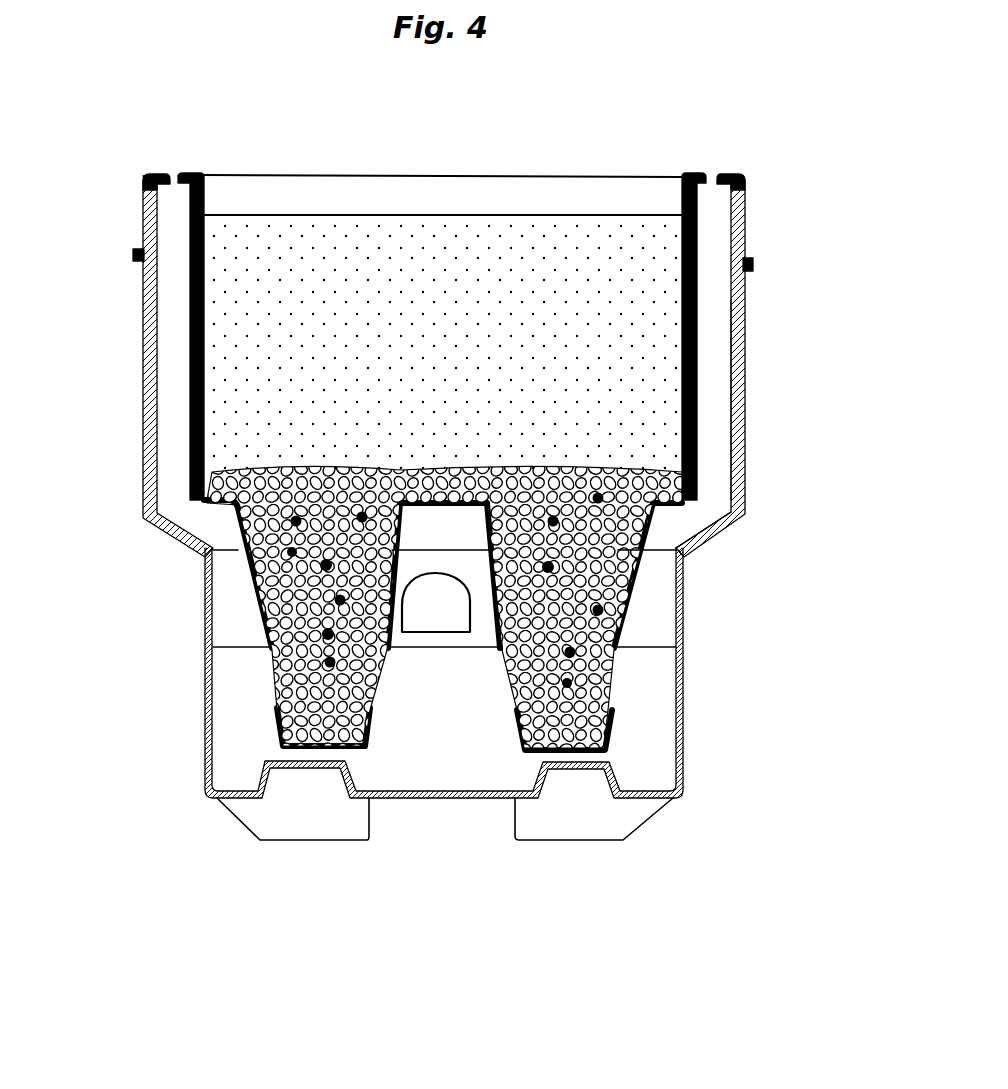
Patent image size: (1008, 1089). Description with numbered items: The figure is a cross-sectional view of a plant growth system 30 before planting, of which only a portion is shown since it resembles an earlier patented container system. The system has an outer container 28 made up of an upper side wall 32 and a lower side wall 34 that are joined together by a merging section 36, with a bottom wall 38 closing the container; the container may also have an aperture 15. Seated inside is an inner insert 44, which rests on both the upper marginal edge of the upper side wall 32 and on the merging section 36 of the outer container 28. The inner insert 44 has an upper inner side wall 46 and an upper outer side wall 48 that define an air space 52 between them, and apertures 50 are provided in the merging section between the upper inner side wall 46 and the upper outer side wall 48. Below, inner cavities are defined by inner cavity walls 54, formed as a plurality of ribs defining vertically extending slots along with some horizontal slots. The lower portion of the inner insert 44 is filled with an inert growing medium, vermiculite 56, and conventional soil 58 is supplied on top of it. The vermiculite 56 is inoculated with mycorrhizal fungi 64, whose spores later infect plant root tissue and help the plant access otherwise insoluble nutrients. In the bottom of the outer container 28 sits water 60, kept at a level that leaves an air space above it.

The plant growth system 30 is at (171, 70).
The outer container 28 is at (792, 340).
The inner insert 44 is at (183, 383).
The upper side wall 32 is at (735, 428).
The upper outer side wall 48 is at (140, 213).
The apertures 50 is at (173, 165).
The air space 52 is at (173, 233).
The upper inner side wall 46 is at (197, 303).
The soil 58 is at (486, 324).
The inner cavity walls 54 is at (255, 532).
The vermiculite 56 is at (268, 592).
The mycorrhizal fungi 64 is at (620, 637).
The merging section 36 is at (713, 542).
The lower side wall 34 is at (681, 690).
The water 60 is at (252, 720).
The aperture 15 is at (413, 622).
The bottom wall 38 is at (435, 800).